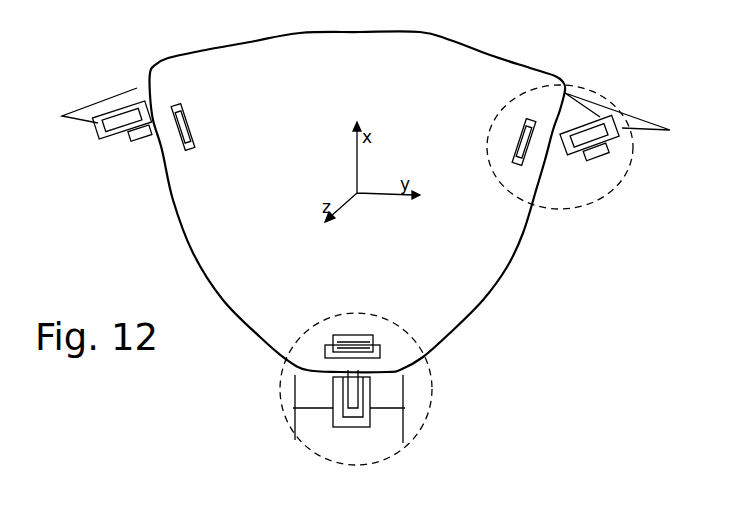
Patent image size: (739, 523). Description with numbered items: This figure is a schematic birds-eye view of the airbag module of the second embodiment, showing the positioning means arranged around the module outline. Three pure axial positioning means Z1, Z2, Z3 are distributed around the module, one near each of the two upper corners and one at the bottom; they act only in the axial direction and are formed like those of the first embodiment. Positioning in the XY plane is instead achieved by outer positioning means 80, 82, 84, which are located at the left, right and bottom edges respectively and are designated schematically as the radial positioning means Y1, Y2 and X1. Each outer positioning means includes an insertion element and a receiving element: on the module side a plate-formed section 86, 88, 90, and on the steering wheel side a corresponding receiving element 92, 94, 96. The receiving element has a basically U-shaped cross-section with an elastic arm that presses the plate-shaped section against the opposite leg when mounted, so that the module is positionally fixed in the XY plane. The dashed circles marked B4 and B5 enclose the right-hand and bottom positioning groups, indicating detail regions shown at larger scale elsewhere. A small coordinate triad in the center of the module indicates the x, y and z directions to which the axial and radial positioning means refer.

The outer positioning means 80 is at (134, 104).
The outer positioning means 82 is at (574, 108).
The outer positioning means 84 is at (314, 387).
The plate-formed section 86 is at (127, 137).
The plate-formed section 88 is at (603, 130).
The plate-formed section 90 is at (333, 410).
The receiving element 92 is at (95, 128).
The receiving element 94 is at (603, 167).
The receiving element 96 is at (400, 393).
The XY positioning means Y1 is at (138, 155).
The axial positioning means Z1 is at (187, 142).
The XY positioning means Y2 is at (591, 166).
The axial positioning means Z2 is at (521, 155).
The axial positioning means Z3 is at (369, 349).
The XY positioning means X1 is at (389, 398).
The detail region B4 is at (587, 192).
The detail region B5 is at (422, 417).